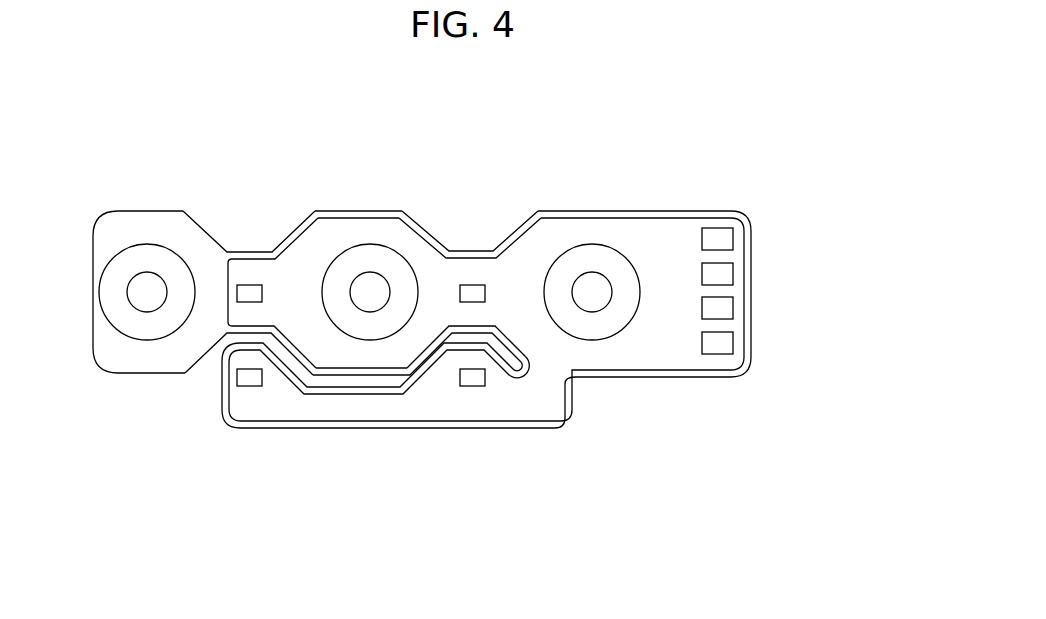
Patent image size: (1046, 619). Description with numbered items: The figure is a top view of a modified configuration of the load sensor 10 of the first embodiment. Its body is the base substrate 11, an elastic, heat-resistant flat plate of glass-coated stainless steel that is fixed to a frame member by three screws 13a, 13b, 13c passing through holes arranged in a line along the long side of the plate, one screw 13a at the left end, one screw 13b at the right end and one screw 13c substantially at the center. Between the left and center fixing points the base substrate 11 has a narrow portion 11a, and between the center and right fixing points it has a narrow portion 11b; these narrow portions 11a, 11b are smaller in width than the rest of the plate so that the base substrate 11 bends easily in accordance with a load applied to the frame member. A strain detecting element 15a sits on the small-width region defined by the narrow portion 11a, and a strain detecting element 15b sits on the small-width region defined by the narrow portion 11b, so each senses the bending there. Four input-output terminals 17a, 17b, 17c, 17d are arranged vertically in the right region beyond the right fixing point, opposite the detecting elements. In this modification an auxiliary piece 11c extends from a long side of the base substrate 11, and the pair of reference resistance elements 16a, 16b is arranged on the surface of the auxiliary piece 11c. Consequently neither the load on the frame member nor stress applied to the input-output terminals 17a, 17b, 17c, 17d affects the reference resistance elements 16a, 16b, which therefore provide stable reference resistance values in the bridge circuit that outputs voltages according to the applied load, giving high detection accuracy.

The load sensor 10 is at (596, 88).
The base substrate 11 is at (705, 210).
The narrow portion 11a is at (249, 239).
The narrow portion 11b is at (491, 237).
The auxiliary piece 11c is at (382, 430).
The screw 13a is at (150, 252).
The screw 13b is at (592, 255).
The screw 13c is at (370, 252).
The strain detecting element 15a is at (237, 292).
The strain detecting element 15b is at (471, 292).
The reference resistance element 16a is at (250, 377).
The reference resistance element 16b is at (472, 377).
The input-output terminal 17a is at (723, 237).
The input-output terminal 17b is at (723, 272).
The input-output terminal 17c is at (723, 307).
The input-output terminal 17d is at (723, 342).